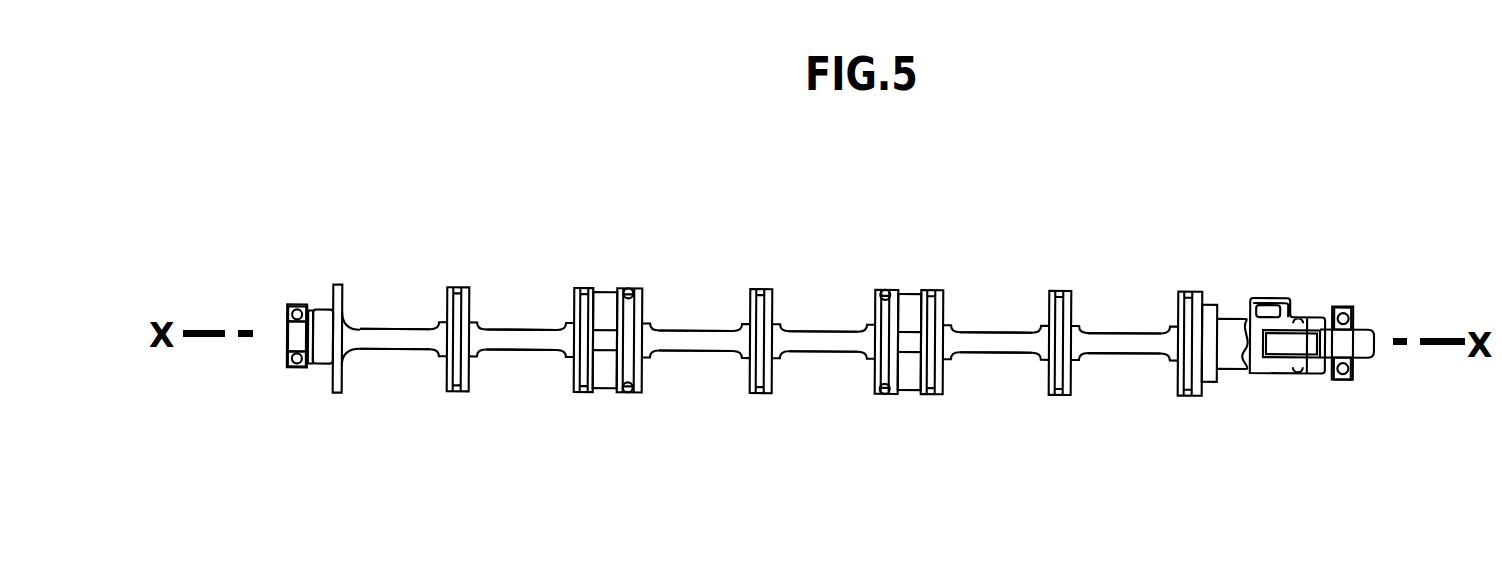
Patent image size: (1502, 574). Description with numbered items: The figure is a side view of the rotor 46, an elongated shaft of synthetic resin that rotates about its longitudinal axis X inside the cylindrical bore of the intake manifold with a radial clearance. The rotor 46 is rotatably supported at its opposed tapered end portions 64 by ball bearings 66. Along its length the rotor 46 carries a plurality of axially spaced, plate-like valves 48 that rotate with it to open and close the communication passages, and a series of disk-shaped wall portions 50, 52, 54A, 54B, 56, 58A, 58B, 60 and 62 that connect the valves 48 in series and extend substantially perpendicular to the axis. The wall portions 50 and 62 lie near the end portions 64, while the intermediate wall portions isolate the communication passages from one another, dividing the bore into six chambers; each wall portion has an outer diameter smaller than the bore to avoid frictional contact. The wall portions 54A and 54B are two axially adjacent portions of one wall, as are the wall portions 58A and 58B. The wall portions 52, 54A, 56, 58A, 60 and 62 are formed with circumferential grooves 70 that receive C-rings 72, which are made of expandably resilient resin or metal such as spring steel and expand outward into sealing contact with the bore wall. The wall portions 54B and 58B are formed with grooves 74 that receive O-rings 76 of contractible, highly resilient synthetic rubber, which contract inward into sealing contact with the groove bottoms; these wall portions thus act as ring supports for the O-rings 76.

The rotor 46 is at (387, 372).
The valves 48 is at (760, 310).
The wall portion 50 is at (336, 394).
The wall portion 52 is at (448, 394).
The wall portion 54A is at (577, 394).
The wall portion 54B is at (632, 394).
The wall portion 56 is at (762, 396).
The wall portion 58A is at (937, 396).
The wall portion 58B is at (876, 396).
The wall portion 60 is at (1065, 397).
The wall portion 62 is at (1195, 399).
The tapered end portions 64 is at (798, 374).
The ball bearings 66 is at (780, 317).
The grooves 70 is at (808, 282).
The C-rings 72 is at (841, 288).
The grooves 74 is at (757, 279).
The O-rings 76 is at (772, 286).